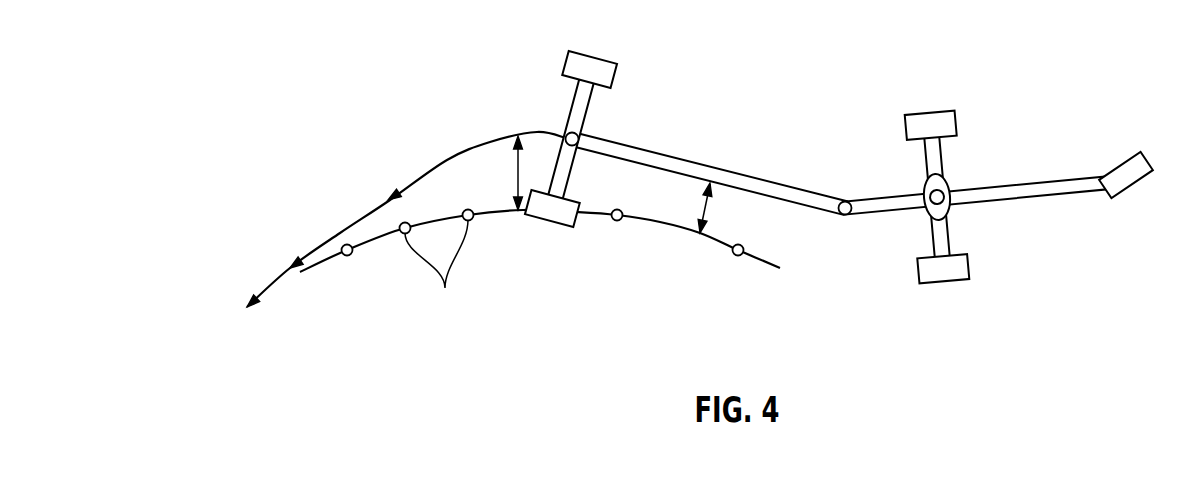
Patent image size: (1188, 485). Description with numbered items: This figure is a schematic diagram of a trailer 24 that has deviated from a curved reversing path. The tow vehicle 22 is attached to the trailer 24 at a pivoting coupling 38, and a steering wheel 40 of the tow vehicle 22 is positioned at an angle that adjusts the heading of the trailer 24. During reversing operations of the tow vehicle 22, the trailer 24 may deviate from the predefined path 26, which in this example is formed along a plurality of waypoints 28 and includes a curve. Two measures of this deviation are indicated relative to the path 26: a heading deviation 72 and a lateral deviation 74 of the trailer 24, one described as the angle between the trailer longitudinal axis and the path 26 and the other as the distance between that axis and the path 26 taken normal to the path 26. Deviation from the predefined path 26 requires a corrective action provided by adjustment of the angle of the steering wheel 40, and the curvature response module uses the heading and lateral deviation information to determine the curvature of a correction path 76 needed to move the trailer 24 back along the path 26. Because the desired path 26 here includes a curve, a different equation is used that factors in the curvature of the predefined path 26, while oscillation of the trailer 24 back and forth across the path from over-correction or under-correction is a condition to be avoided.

The tow vehicle 22 is at (1052, 183).
The trailer 24 is at (652, 157).
The predefined path 26 is at (322, 263).
The waypoints 28 is at (436, 275).
The pivoting coupling 38 is at (847, 203).
The steering wheel 40 is at (1132, 187).
The heading deviation 72 is at (518, 172).
The lateral deviation 74 is at (710, 187).
The correction path 76 is at (447, 160).